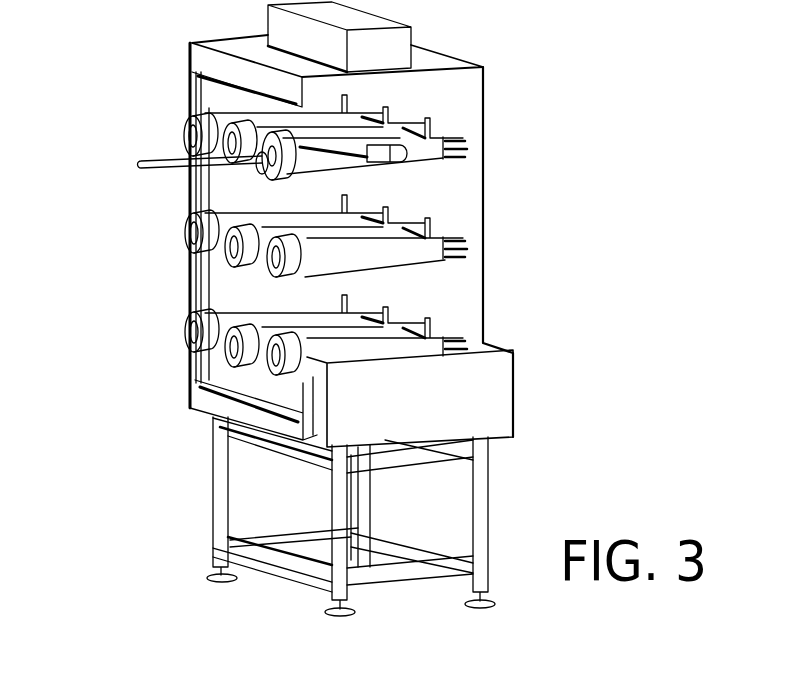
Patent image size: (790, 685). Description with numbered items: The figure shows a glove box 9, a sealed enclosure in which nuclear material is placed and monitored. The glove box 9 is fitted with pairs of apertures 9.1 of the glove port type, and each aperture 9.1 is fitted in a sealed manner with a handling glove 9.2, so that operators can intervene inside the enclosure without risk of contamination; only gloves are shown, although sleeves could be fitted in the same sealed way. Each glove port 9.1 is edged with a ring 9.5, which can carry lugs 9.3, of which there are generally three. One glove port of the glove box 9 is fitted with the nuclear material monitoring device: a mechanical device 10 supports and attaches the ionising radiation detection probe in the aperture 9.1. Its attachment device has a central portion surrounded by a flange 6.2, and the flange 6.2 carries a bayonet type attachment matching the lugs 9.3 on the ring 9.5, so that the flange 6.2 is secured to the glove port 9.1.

The glove box 9 is at (508, 142).
The aperture 9.1 is at (192, 336).
The handling glove 9.2 is at (438, 243).
The lug 9.3 is at (189, 303).
The ring 9.5 is at (188, 210).
The flange 6.2 is at (266, 128).
The mechanical device 10 is at (155, 157).